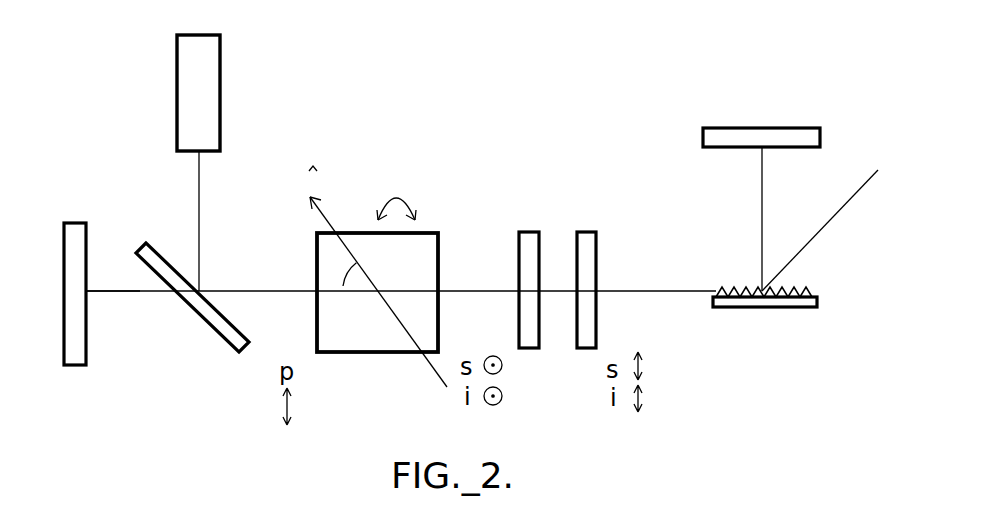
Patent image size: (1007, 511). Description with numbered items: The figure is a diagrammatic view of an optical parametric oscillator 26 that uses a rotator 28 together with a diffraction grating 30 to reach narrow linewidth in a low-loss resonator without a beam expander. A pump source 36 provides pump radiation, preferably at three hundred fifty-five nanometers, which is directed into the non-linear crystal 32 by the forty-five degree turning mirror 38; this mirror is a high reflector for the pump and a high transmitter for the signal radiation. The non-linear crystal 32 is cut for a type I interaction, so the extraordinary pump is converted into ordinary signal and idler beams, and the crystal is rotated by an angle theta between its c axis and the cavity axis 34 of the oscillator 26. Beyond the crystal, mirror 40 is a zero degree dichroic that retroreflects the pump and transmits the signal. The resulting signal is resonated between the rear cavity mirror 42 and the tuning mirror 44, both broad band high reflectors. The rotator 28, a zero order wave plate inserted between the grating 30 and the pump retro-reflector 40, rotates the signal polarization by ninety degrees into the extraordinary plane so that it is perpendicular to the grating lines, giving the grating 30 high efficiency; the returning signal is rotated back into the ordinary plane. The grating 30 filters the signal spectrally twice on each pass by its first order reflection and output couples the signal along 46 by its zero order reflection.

The optical parametric oscillator 26 is at (492, 106).
The rotator 28 is at (585, 238).
The diffraction grating 30 is at (797, 308).
The non-linear crystal 32 is at (400, 347).
The cavity axis 34 is at (126, 293).
The pump source 36 is at (212, 76).
The turning mirror 38 is at (236, 356).
The mirror 40 is at (529, 345).
The rear cavity mirror 42 is at (75, 372).
The tuning mirror 44 is at (730, 128).
The zero order reflection output path 46 is at (815, 236).